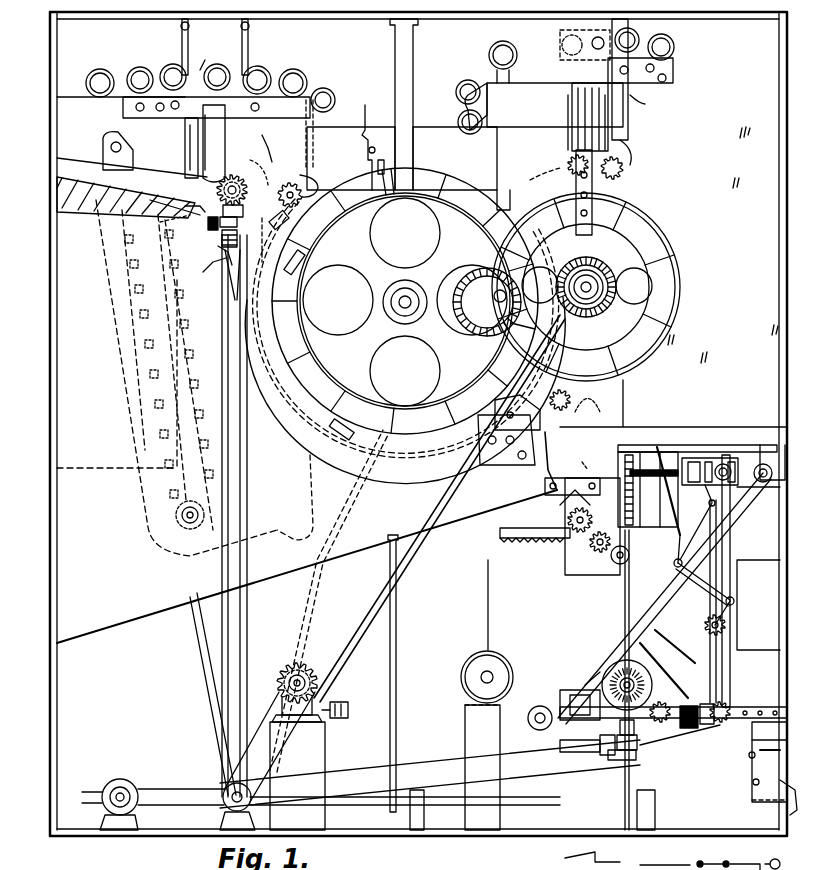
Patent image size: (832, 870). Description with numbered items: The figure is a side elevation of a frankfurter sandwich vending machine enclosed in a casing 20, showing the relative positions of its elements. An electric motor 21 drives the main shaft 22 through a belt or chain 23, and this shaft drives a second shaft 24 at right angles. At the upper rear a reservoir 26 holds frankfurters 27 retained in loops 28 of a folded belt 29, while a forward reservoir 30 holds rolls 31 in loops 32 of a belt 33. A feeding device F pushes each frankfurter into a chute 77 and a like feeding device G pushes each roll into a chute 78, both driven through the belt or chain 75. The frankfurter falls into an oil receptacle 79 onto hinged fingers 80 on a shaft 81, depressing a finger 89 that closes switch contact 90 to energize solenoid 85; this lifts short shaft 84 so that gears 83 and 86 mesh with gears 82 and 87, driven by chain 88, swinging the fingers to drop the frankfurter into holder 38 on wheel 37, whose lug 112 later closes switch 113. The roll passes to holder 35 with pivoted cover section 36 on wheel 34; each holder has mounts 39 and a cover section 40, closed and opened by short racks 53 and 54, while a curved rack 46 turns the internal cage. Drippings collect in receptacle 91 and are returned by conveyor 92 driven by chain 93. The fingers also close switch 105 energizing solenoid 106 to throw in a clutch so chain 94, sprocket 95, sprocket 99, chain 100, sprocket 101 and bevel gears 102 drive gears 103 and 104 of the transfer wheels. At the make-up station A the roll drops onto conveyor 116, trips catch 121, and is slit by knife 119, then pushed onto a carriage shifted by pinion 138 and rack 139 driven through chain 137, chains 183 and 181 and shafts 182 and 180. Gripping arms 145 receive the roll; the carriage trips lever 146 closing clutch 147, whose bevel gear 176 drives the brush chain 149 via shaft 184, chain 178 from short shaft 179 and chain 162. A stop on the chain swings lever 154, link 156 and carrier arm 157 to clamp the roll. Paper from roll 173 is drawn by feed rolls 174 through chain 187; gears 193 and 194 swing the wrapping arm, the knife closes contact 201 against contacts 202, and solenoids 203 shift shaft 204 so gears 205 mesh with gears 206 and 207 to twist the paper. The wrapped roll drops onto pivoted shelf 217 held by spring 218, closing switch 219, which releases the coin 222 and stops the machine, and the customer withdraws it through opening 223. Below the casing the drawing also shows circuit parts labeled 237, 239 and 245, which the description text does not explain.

The casing 20 is at (50, 576).
The electric motor 21 is at (124, 781).
The main shaft 22 is at (224, 808).
The belt or chain 23 is at (172, 788).
The shaft 24 is at (440, 810).
The reservoir 26 is at (60, 134).
The frankfurters 27 is at (172, 66).
The loops 28 is at (138, 70).
The belt 29 is at (318, 90).
The reservoir 30 is at (723, 245).
The rolls 31 is at (675, 48).
The loops 32 is at (490, 48).
The belt 33 is at (490, 100).
The wheel 34 is at (680, 262).
The holder 35 is at (559, 167).
The pivoted cover section 36 is at (632, 160).
The wheel 37 is at (456, 180).
The holder 38 is at (246, 231).
The mounts 39 is at (322, 200).
The cover section 40 is at (316, 182).
The stationary curved rack 46 is at (380, 228).
The short rack 53 is at (310, 238).
The short rack 54 is at (568, 415).
The belt or chain 75 is at (398, 640).
The chute 77 is at (222, 150).
The chute 78 is at (572, 142).
The receptacle 79 is at (178, 208).
The hinged fingers 80 is at (214, 191).
The shaft 81 is at (232, 178).
The beveled gear 82 is at (241, 172).
The gear 83 is at (247, 211).
The short shaft 84 is at (222, 236).
The solenoid 85 is at (208, 228).
The bevel gear 86 is at (210, 270).
The bevel gear 87 is at (205, 264).
The chain or belt 88 is at (245, 466).
The finger 89 is at (193, 196).
The switch contact 90 is at (280, 192).
The receptacle 91 is at (282, 512).
The conveyor 92 is at (138, 385).
The chain or belt 93 is at (200, 662).
The belt or chain 94 is at (283, 752).
The pulley or sprocket 95 is at (320, 660).
The sprocket 99 is at (305, 665).
The chain 100 is at (400, 575).
The sprocket 101 is at (560, 325).
The bevel gears 102 is at (470, 336).
The gear 103 is at (608, 310).
The gear 104 is at (392, 358).
The switch 105 is at (275, 145).
The solenoid 106 is at (343, 718).
The lug 112 is at (380, 185).
The switch 113 is at (368, 160).
The conveyor 116 is at (555, 585).
The knife 119 is at (550, 508).
The catch 121 is at (585, 478).
The chain 137 is at (668, 634).
The pinion 138 is at (630, 556).
The rack 139 is at (535, 555).
The gripping arms or plates 145 is at (560, 522).
The lever 146 is at (730, 525).
The clutch 147 is at (706, 455).
The endless chain 149 is at (634, 466).
The lever 154 is at (665, 437).
The link 156 is at (672, 510).
The carrier arm 157 is at (690, 593).
The chain 162 is at (731, 673).
The roll of paper 173 is at (466, 668).
The feed rolls 174 is at (535, 708).
The bevel gear 176 is at (757, 466).
The chain 178 is at (730, 538).
The short shaft 179 is at (726, 625).
The short shaft 180 is at (708, 728).
The chain 181 is at (690, 730).
The short shaft 182 is at (618, 765).
The chain 183 is at (590, 771).
The shaft 184 is at (654, 482).
The chain 187 is at (576, 669).
The gear 193 is at (722, 725).
The gear 194 is at (675, 745).
The contact 201 is at (577, 756).
The contacts 202 is at (430, 773).
The solenoids 203 is at (602, 750).
The short shaft 204 is at (665, 740).
The gears 205 is at (652, 690).
The gear 206 is at (615, 672).
The gears 207 is at (645, 755).
The pivoted shelf 217 is at (769, 762).
The spring 218 is at (748, 760).
The switch 219 is at (672, 809).
The coin 222 is at (665, 858).
The opening 223 is at (774, 797).
The contact 237 is at (731, 855).
The contact 239 is at (687, 856).
The lamp 245 is at (779, 855).
The make-up station A is at (586, 460).
The feeding device F is at (210, 57).
The feeding device G is at (643, 103).